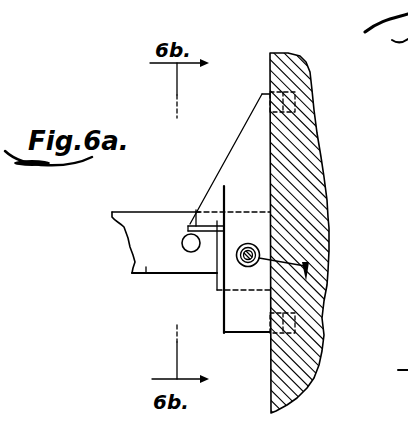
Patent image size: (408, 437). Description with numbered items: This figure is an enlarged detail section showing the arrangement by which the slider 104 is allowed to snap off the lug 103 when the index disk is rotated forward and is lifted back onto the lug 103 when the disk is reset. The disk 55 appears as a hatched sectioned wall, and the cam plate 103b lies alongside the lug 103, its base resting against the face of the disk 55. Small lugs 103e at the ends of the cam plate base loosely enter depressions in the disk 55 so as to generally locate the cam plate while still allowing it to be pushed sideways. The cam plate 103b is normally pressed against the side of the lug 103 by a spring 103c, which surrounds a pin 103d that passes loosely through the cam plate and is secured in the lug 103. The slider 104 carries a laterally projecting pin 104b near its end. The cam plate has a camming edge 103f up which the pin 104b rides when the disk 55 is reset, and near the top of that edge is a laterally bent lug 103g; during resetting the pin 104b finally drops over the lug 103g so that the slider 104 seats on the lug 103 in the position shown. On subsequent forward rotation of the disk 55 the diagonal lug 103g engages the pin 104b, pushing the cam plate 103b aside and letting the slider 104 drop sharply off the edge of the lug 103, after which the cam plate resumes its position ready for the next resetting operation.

The disk 55 is at (301, 175).
The lug 103 is at (252, 229).
The cam plate 103b is at (219, 174).
The spring 103c is at (259, 252).
The pin 103d is at (311, 262).
The small lugs 103e is at (296, 106).
The camming edge 103f is at (224, 163).
The laterally bent lug 103g is at (196, 219).
The slider 104 is at (142, 273).
The laterally projecting pin 104b is at (191, 252).